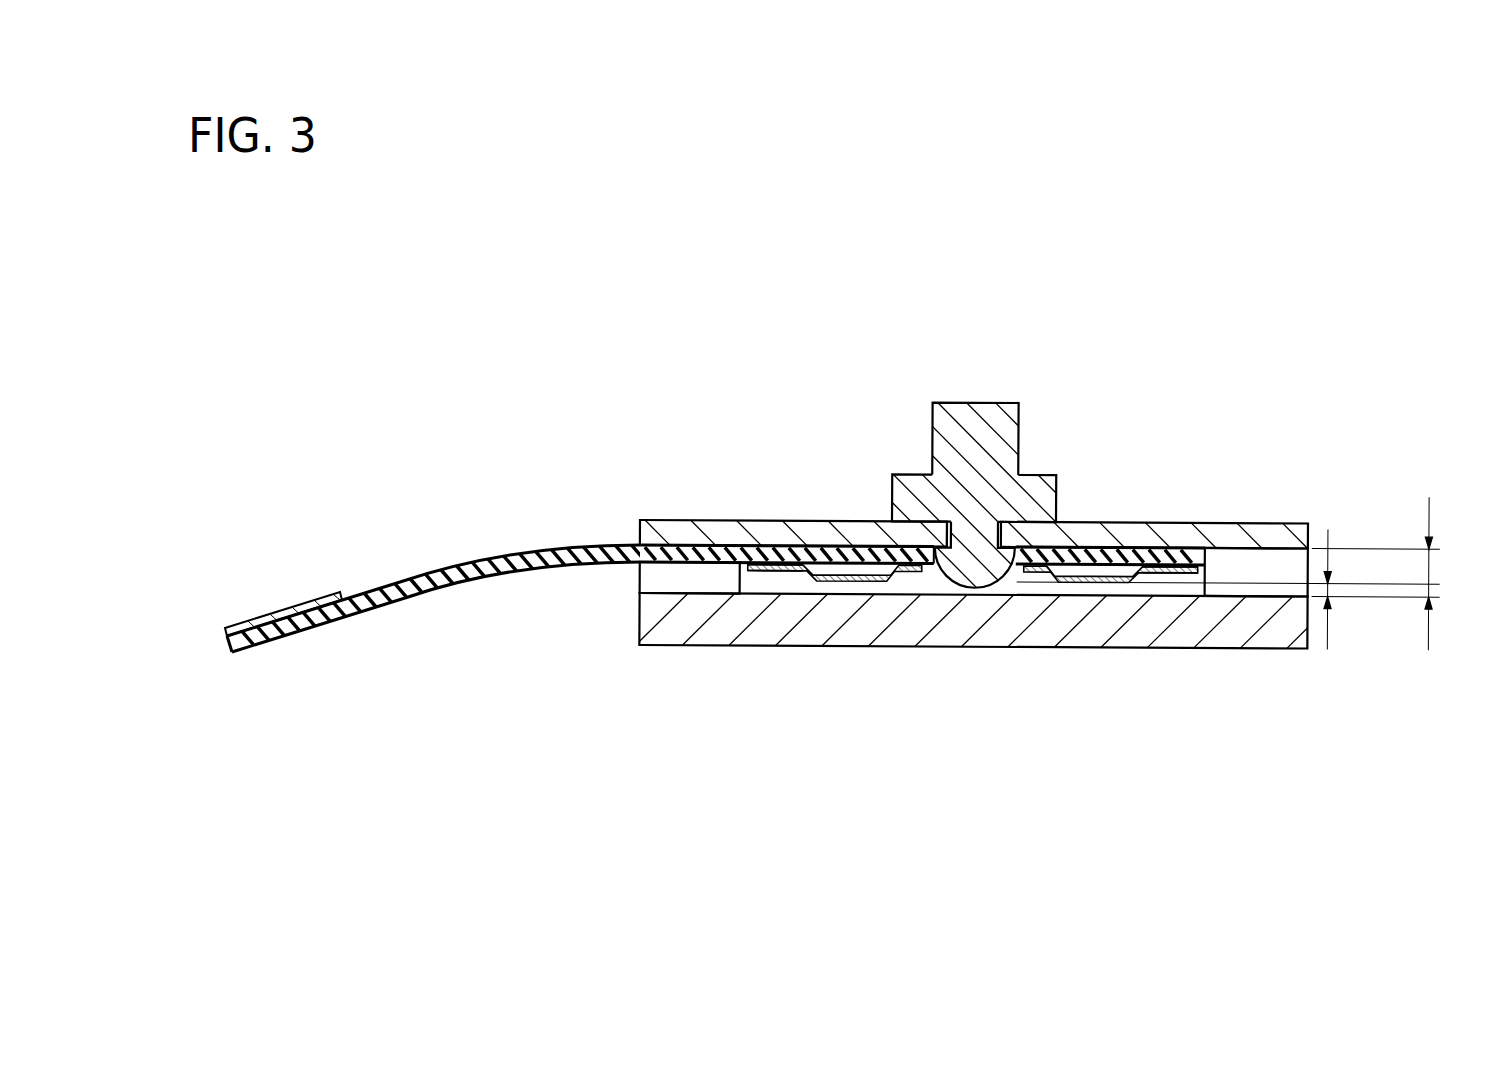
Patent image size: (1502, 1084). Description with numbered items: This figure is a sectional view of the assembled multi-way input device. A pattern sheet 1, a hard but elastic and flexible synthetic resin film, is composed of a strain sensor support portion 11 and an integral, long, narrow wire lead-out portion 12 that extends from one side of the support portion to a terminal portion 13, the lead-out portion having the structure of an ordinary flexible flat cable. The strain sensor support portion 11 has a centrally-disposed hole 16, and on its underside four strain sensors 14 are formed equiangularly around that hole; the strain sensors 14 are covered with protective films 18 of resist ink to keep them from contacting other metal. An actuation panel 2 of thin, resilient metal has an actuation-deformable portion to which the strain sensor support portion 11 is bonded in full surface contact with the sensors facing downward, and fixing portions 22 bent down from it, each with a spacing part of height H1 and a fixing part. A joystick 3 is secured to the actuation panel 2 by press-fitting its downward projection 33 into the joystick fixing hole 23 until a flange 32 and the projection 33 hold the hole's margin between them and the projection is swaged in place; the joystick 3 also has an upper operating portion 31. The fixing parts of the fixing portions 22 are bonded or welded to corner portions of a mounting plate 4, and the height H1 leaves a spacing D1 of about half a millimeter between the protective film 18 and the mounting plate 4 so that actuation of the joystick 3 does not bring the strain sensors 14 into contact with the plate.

The pattern sheet 1 is at (426, 553).
The strain sensor support portion 11 is at (873, 548).
The wire lead-out portion 12 is at (582, 546).
The terminal portion 13 is at (297, 605).
The actuation panel 2 is at (989, 588).
The fixing portion 22 is at (1238, 560).
The joystick fixing hole 23 is at (975, 535).
The joystick 3 is at (973, 530).
The operating portion of slider 31 is at (975, 439).
The flange 32 is at (974, 498).
The downward projection 33 is at (975, 568).
The mounting plate 4 is at (1257, 638).
The strain sensor 14 is at (852, 580).
The centrally-disposed hole 16 is at (934, 560).
The protective film 18 is at (797, 572).
The contact displacement dimension D1 is at (1330, 590).
The height of spacing part H1 is at (1432, 578).